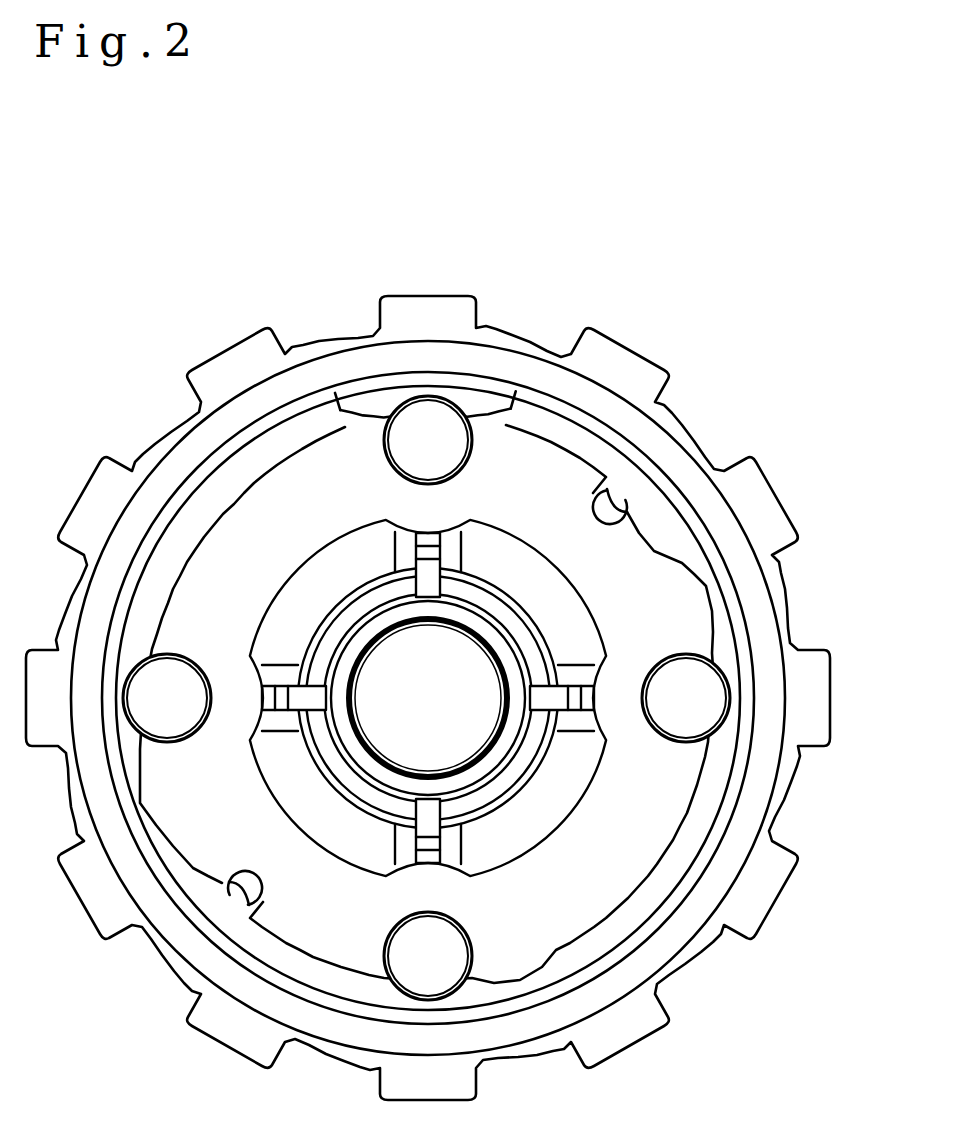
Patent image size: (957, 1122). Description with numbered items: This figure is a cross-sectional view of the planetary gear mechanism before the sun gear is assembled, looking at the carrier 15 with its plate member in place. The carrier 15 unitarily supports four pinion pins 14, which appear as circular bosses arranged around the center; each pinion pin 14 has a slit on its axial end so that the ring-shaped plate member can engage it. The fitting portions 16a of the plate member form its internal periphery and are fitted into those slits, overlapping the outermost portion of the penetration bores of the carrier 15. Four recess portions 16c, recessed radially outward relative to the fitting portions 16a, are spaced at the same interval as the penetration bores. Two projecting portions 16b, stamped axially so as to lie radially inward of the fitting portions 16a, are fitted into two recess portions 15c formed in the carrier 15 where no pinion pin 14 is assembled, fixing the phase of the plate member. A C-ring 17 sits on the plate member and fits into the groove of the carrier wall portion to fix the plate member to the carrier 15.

The pinion pin 14 is at (428, 464).
The carrier 15 is at (526, 332).
The recess portion 15c is at (603, 524).
The fitting portion 16a is at (510, 410).
The projecting portion 16b is at (637, 513).
The recess portion 16c is at (329, 422).
The C-ring 17 is at (258, 430).